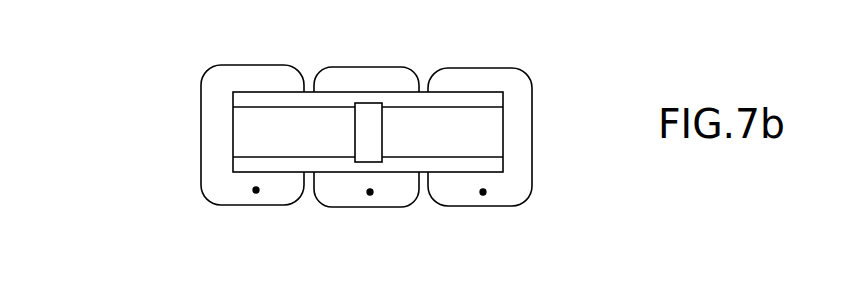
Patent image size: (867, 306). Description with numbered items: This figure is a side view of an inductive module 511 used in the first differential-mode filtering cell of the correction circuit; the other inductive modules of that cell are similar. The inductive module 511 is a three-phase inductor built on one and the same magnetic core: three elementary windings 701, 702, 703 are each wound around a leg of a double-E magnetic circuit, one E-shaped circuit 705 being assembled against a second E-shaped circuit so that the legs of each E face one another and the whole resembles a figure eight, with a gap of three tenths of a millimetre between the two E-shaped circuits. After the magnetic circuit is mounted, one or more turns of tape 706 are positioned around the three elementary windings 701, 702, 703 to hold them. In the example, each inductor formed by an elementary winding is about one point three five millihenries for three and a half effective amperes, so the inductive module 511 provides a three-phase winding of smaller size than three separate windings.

The inductive module 511 is at (157, 108).
The elementary winding 701 is at (201, 173).
The elementary winding 702 is at (387, 210).
The elementary winding 703 is at (515, 113).
The E-shaped circuit 705 is at (483, 142).
The tape 706 is at (333, 123).